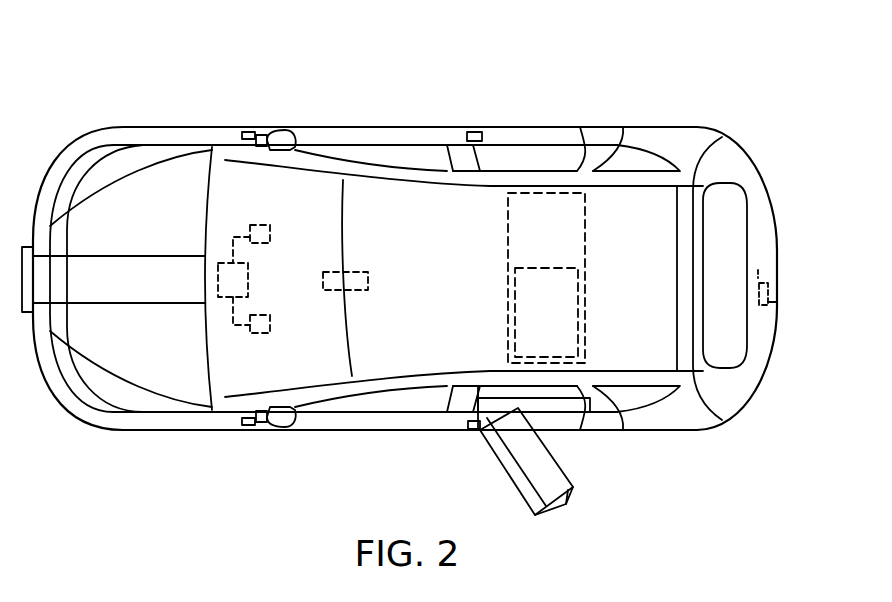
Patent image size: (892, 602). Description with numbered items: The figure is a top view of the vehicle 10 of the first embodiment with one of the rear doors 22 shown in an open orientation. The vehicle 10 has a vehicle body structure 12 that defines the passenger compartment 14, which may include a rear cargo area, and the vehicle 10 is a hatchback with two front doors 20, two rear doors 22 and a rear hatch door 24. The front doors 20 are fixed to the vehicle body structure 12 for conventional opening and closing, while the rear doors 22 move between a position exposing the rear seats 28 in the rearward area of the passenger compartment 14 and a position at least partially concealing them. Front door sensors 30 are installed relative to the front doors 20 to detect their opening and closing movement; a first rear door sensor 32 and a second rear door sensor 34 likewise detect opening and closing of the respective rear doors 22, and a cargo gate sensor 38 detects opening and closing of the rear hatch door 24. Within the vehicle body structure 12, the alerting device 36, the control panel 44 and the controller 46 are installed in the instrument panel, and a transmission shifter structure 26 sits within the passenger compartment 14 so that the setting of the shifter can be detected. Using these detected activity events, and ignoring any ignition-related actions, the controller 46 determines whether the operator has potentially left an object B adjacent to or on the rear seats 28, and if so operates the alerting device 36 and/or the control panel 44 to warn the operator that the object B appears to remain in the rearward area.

The vehicle 10 is at (610, 99).
The vehicle body structure 12 is at (502, 127).
The passenger compartment 14 is at (391, 164).
The front doors 20 is at (337, 133).
The rear doors 22 is at (545, 137).
The rear hatch door 24 is at (760, 233).
The transmission shifter structure 26 is at (363, 291).
The rear seats 28 is at (508, 228).
The front door sensor 30 is at (241, 132).
The first rear door sensor 32 is at (466, 425).
The second rear door sensor 34 is at (466, 136).
The alerting device 36 is at (265, 224).
The cargo gate sensor 38 is at (776, 308).
The control panel 44 is at (265, 334).
The controller 46 is at (238, 278).
The object B is at (578, 287).